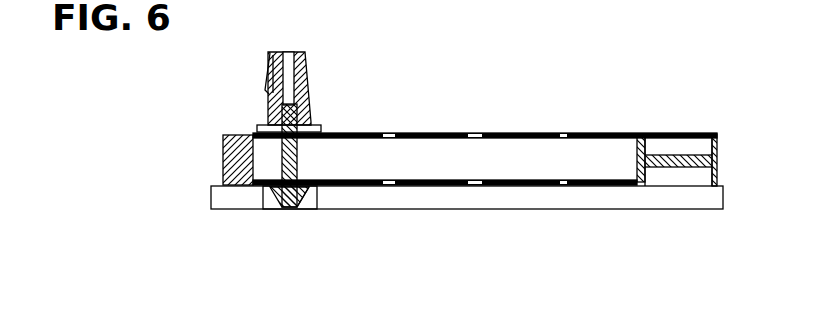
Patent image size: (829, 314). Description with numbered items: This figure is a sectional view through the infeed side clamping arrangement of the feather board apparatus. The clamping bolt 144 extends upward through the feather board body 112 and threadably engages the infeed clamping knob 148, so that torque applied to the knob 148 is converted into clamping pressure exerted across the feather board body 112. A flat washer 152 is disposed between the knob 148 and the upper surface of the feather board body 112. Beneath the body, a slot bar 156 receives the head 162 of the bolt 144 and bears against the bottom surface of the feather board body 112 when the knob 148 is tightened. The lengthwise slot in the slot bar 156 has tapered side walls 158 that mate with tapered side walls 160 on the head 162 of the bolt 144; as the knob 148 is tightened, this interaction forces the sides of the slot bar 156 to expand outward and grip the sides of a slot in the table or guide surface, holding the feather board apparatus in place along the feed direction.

The feather board body 112 is at (223, 160).
The infeed clamping bolt 144 is at (299, 152).
The infeed clamping knob 148 is at (268, 61).
The flat washer 152 is at (263, 127).
The slot bar 156 is at (218, 194).
The tapered side walls of slot bar slot 158 is at (283, 210).
The tapered side walls of bolt head 160 is at (296, 212).
The head of the bolt 162 is at (261, 190).